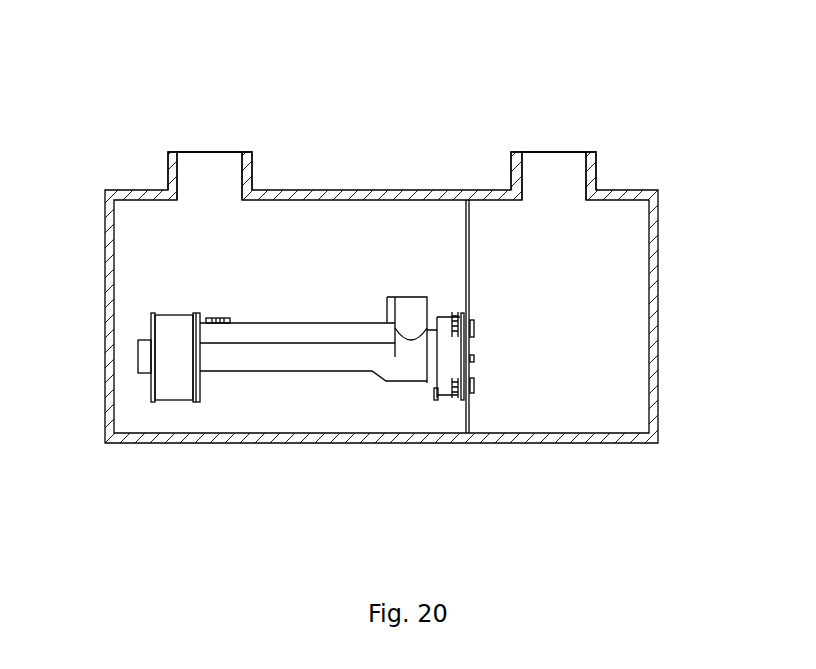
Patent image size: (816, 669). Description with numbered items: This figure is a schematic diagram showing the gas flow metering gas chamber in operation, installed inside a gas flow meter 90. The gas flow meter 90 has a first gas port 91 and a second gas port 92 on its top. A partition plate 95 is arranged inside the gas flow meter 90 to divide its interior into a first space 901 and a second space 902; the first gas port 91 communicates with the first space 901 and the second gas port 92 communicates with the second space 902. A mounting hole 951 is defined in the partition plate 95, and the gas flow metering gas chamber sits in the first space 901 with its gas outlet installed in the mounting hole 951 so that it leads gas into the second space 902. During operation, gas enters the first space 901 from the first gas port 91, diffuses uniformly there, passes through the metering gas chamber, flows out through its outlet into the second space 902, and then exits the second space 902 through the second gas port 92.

The gas flow meter 90 is at (340, 193).
The first gas port 91 is at (205, 168).
The second gas port 92 is at (559, 165).
The partition plate 95 is at (468, 287).
The mounting hole 951 is at (465, 397).
The first space 901 is at (272, 400).
The second space 902 is at (612, 400).